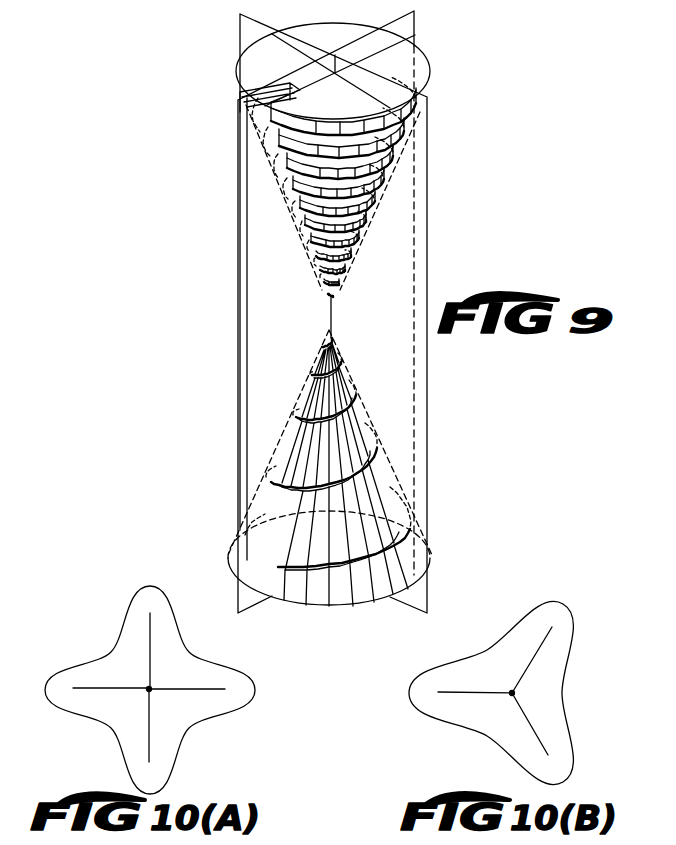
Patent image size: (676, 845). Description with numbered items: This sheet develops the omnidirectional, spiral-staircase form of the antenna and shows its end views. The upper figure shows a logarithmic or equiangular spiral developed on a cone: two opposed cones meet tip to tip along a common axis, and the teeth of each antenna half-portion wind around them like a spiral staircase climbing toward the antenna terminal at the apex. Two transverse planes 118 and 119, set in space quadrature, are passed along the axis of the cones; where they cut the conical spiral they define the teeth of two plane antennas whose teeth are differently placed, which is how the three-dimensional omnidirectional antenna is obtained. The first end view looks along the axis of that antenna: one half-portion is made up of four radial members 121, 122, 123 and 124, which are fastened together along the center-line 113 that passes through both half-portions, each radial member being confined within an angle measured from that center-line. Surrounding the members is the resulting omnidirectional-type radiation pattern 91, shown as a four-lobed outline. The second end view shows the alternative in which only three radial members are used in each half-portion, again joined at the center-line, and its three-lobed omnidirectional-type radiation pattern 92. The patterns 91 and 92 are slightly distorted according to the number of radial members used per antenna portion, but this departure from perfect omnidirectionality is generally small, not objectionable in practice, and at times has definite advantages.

In FIG. 9, the transverse plane 118 is at (416, 31).
In FIG. 9, the transverse plane 119 is at (239, 33).
In FIG. 10A, the omnidirectional-type radiation pattern 91 is at (198, 743).
In FIG. 10B, the omnidirectional-type radiation pattern 92 is at (572, 719).
In FIG. 10A, the center-line 113 is at (152, 691).
In FIG. 10A, the radial member 121 is at (172, 688).
In FIG. 10A, the radial member 122 is at (150, 725).
In FIG. 10A, the radial member 123 is at (141, 689).
In FIG. 10A, the radial member 124 is at (150, 663).